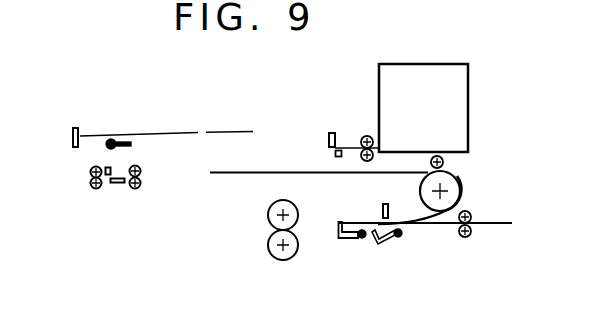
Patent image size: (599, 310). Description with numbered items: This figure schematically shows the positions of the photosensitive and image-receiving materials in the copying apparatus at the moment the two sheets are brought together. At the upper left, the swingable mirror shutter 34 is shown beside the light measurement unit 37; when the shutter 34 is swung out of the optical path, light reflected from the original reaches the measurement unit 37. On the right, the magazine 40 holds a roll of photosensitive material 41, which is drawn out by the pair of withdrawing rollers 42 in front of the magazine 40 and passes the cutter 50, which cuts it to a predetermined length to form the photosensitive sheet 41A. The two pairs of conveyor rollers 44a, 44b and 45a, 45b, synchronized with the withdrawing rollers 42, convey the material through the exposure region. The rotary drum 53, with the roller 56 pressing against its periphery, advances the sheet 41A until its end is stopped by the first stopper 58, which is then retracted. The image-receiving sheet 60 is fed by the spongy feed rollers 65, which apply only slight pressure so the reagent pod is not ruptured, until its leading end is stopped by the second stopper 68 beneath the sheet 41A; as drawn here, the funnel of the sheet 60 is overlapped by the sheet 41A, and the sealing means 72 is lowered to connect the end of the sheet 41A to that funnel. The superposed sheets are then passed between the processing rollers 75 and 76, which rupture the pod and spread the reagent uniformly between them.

The light measurement unit 37 is at (77, 127).
The mirror shutter 34 is at (121, 137).
The conveyor roller 45a is at (88, 168).
The conveyor roller 45b is at (96, 190).
The conveyor roller 44a is at (143, 168).
The conveyor roller 44b is at (137, 190).
The photosensitive sheet 41A is at (279, 170).
The processing roller 75 is at (268, 205).
The processing roller 76 is at (284, 262).
The sealing means 72 is at (382, 206).
The magazine 40 is at (421, 66).
The cutter 50 is at (333, 130).
The photosensitive material 41 is at (353, 147).
The withdrawing rollers 42 is at (367, 134).
The roller 56 is at (446, 163).
The rotary drum 53 is at (460, 191).
The image-receiving sheet 60 is at (500, 230).
The feed rollers 65 is at (467, 238).
The second stopper 68 is at (352, 240).
The first stopper 58 is at (388, 246).